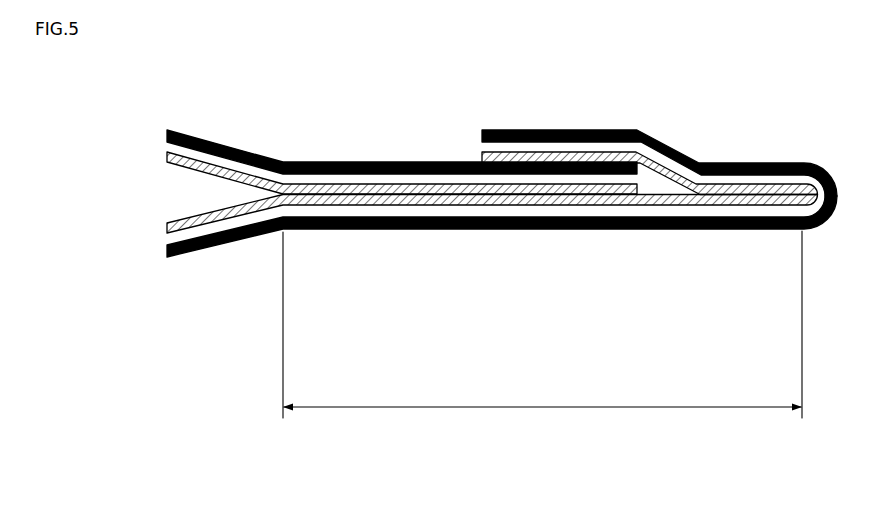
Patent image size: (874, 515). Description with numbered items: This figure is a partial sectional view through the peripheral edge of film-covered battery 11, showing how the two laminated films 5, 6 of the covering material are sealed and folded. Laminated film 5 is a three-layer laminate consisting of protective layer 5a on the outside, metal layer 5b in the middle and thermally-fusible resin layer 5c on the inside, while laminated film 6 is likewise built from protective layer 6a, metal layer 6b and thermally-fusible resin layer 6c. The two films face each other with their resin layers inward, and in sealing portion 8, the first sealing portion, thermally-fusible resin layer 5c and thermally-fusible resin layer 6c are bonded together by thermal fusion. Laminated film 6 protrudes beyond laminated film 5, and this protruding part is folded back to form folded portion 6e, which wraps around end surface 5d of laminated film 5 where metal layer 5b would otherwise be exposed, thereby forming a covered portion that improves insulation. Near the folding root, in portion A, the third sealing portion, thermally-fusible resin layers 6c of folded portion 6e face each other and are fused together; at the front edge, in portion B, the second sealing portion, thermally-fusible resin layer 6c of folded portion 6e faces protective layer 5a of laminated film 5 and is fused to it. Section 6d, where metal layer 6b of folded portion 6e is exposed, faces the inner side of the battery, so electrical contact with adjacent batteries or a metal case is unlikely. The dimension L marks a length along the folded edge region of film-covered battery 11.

The laminated film 5 is at (82, 123).
The protective layer 5a is at (167, 131).
The metal layer 5b is at (168, 143).
The thermally-fusible resin layer 5c is at (167, 157).
The end surface 5d is at (650, 180).
The laminated film 6 is at (82, 243).
The protective layer 6a is at (166, 254).
The metal layer 6b is at (172, 243).
The thermally-fusible resin layer 6c is at (168, 232).
The section where metal layer is exposed 6d is at (461, 145).
The folded portion 6e is at (730, 252).
The sealing portion 8 is at (431, 199).
The film-covered battery 11 is at (554, 493).
The portion A (third sealing portion) A is at (736, 190).
The portion B (second sealing portion) B is at (529, 160).
The length L is at (542, 324).